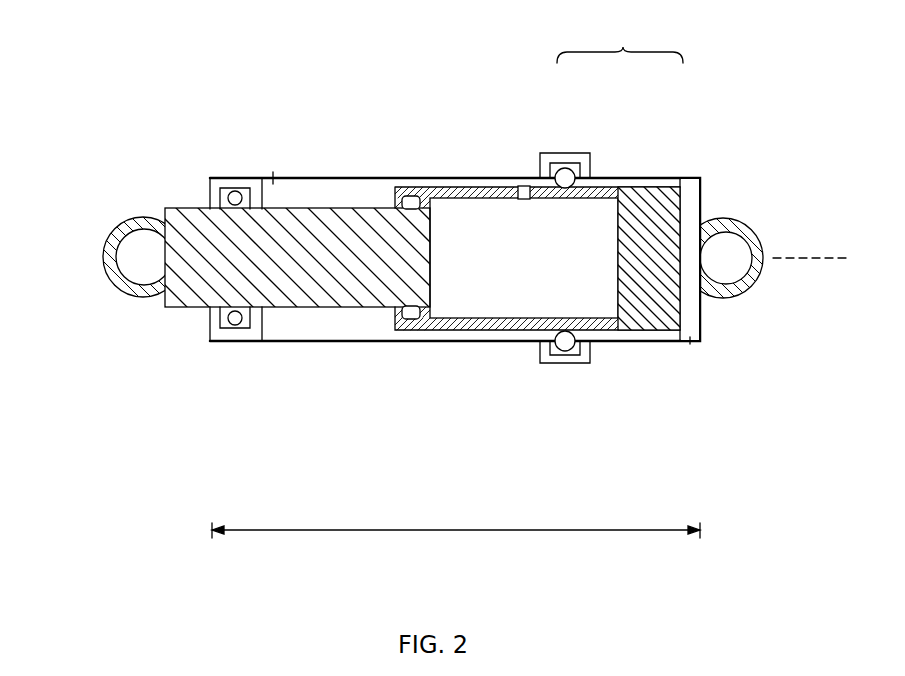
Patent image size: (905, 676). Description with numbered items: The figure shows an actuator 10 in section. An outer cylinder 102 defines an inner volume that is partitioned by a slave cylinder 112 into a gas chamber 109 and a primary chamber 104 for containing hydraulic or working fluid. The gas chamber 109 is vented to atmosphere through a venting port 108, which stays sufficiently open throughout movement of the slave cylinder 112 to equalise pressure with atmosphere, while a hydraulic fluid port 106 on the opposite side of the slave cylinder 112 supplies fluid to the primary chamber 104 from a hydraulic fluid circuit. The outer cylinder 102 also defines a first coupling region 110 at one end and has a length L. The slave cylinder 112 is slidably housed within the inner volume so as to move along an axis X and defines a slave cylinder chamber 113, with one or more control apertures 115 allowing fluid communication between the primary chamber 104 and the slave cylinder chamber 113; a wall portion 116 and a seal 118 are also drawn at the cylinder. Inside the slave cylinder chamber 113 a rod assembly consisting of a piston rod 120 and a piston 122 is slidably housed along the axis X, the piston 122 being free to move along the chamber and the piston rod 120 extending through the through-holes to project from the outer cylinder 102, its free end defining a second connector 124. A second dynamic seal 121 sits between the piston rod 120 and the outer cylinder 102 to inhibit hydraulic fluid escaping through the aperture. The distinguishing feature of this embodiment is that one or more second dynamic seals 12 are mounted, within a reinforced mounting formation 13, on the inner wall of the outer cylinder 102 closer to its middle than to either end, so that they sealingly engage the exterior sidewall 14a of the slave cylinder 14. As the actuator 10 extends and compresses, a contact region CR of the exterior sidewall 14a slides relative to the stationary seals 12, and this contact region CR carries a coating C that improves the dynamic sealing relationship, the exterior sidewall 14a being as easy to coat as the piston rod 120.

The actuator 10 is at (733, 139).
The second dynamic seal 12 is at (565, 170).
The reinforced mounting formation 13 is at (557, 153).
The slave cylinder 14 is at (652, 340).
The exterior sidewall 14a is at (603, 338).
The outer cylinder 102 is at (503, 254).
The primary chamber 104 is at (360, 190).
The hydraulic fluid port 106 is at (270, 178).
The venting port 108 is at (691, 341).
The gas chamber 109 is at (697, 310).
The first coupling region 110 is at (737, 228).
The slave cylinder 112 is at (477, 341).
The slave cylinder chamber 113 is at (600, 267).
The control aperture 115 is at (522, 187).
The cylinder wall 116 is at (595, 184).
The seal 118 is at (405, 322).
The piston rod 120 is at (258, 308).
The second dynamic seal 121 is at (213, 190).
The piston 122 is at (430, 268).
The second connector 124 is at (105, 245).
The coating C is at (652, 177).
The contact region CR is at (620, 40).
The length L is at (456, 545).
The axis X is at (818, 259).